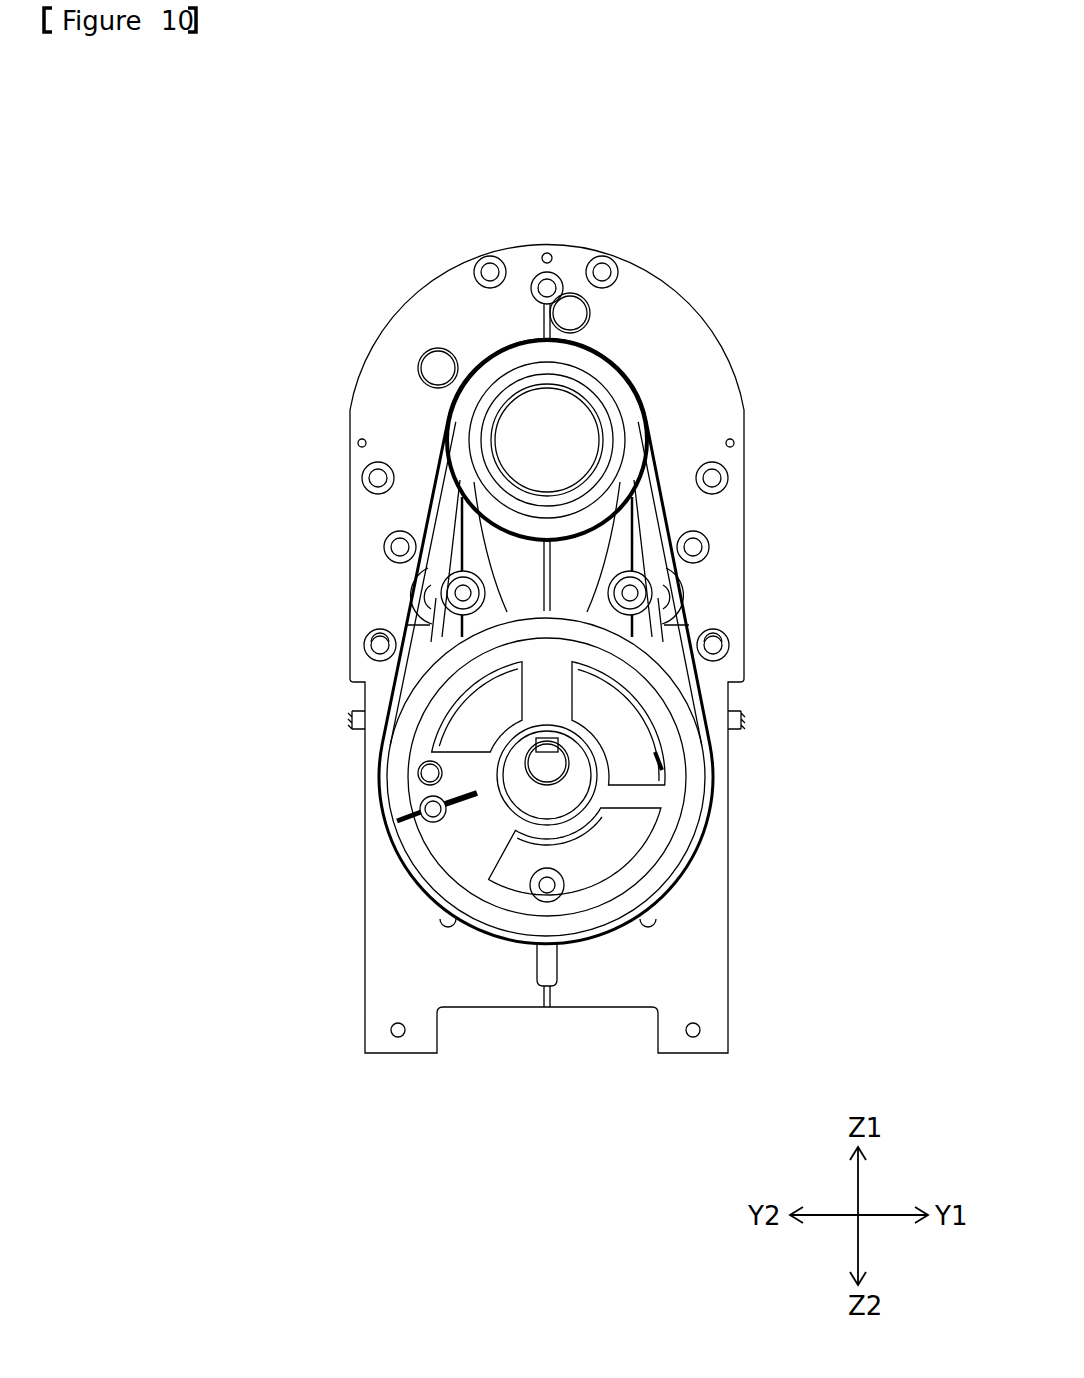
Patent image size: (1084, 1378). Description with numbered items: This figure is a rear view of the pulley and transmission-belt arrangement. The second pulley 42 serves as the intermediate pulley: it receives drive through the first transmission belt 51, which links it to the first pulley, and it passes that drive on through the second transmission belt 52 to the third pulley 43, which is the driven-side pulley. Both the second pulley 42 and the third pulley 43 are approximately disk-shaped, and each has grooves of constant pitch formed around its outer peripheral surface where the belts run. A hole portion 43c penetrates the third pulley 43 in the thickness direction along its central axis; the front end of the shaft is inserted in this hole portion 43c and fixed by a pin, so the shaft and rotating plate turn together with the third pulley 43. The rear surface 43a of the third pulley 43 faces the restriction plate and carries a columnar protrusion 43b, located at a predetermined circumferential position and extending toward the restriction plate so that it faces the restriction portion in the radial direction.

The second pulley 42 is at (610, 383).
The third pulley 43 is at (697, 762).
The rear surface 43a is at (422, 693).
The protrusion 43b is at (417, 777).
The hole portion 43c is at (540, 795).
The first transmission belt 51 is at (633, 528).
The second transmission belt 52 is at (678, 607).